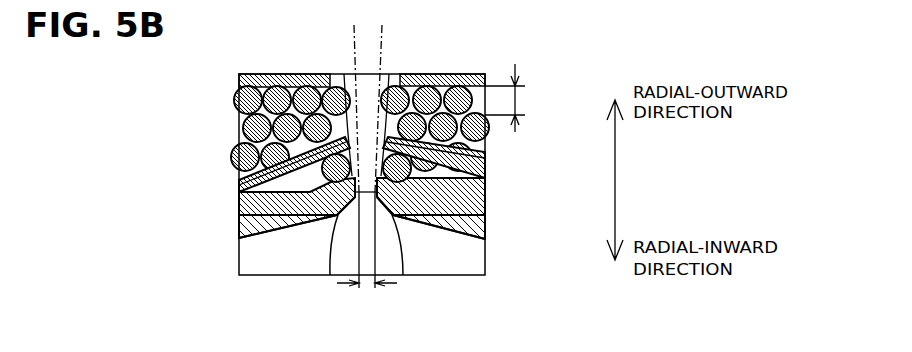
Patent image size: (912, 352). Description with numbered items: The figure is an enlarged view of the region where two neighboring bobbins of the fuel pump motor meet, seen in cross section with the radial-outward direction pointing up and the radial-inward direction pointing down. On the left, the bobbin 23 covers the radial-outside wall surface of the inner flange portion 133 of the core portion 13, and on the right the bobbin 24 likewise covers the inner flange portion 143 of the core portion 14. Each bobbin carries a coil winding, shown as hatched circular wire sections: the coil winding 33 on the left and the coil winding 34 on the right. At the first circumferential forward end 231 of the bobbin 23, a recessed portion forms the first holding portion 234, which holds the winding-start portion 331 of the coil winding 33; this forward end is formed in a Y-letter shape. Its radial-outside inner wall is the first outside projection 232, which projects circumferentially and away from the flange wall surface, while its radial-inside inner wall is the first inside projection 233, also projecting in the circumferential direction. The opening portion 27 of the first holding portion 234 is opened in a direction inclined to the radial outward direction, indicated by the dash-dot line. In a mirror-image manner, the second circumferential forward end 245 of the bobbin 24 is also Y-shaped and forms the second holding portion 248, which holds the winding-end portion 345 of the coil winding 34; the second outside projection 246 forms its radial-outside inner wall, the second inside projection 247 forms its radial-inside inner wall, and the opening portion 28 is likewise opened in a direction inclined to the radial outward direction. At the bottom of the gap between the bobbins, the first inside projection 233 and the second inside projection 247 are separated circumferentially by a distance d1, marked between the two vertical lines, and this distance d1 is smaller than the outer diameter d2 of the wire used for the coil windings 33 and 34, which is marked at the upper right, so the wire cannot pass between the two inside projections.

The core portion 13 is at (226, 217).
The core portion 14 is at (500, 216).
The bobbin 23 is at (226, 184).
The bobbin 24 is at (500, 182).
The opening portion 27 is at (351, 97).
The opening portion 28 is at (382, 97).
The coil winding 33 is at (277, 74).
The coil winding 34 is at (461, 74).
The first outside projection 232 is at (240, 153).
The second outside projection 246 is at (486, 149).
The first holding portion 234 is at (325, 74).
The second holding portion 248 is at (403, 74).
The first circumferential forward end 231 is at (256, 235).
The inner flange portion 133 is at (276, 230).
The winding-start portion 331 is at (309, 232).
The first inside projection 233 is at (331, 262).
The second circumferential forward end 245 is at (473, 232).
The inner flange portion 143 is at (450, 232).
The winding-end portion 345 is at (427, 232).
The second inside projection 247 is at (401, 262).
The distance d1 is at (364, 286).
The outer diameter d2 is at (516, 101).